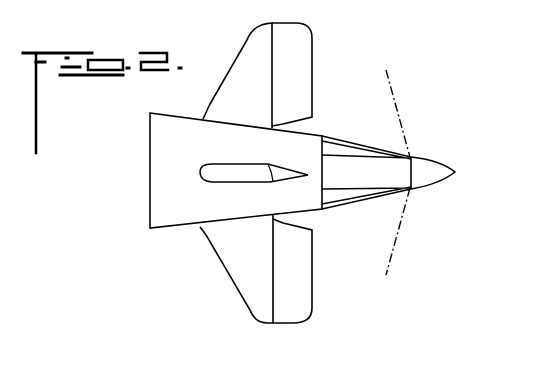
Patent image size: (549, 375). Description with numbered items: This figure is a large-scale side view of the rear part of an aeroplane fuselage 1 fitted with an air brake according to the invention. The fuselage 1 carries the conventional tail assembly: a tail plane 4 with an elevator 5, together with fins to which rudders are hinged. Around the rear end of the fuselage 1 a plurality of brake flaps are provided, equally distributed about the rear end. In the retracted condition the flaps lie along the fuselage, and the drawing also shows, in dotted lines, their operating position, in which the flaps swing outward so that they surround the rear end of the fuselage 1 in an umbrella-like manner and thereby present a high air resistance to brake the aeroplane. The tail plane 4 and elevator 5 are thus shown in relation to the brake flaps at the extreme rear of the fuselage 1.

The aeroplane fuselage 1 is at (165, 167).
The tail plane 4 is at (222, 175).
The elevator 5 is at (278, 175).